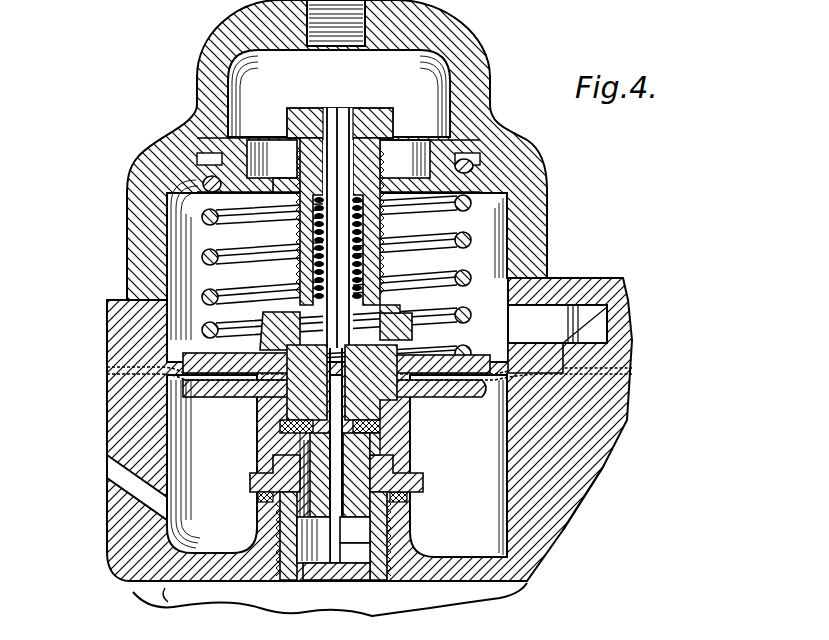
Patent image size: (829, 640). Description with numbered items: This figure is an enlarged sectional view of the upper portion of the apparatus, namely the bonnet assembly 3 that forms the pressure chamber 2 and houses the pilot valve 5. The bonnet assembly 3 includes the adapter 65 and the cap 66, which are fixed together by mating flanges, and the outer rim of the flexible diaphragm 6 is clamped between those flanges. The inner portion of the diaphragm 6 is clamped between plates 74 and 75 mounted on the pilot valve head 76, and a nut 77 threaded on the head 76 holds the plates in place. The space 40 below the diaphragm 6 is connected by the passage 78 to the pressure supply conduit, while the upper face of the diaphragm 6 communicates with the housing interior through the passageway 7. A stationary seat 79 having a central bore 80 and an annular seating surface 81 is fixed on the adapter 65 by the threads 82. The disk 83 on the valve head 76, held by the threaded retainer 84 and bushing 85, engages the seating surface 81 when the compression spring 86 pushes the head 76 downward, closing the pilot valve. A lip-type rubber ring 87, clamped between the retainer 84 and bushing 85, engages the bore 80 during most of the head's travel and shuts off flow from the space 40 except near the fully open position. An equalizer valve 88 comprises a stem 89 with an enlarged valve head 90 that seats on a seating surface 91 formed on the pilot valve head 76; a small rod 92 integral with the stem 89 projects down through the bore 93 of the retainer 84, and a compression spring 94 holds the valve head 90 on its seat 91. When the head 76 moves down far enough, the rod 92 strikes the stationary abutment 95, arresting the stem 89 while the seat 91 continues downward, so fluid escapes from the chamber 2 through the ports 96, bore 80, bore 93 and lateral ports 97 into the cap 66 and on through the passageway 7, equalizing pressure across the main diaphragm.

The chamber 2 is at (168, 598).
The bonnet assembly 3 is at (104, 412).
The pilot valve 5 is at (270, 411).
The flexible diaphragm 6 is at (514, 363).
The passageway 7 is at (600, 347).
The space 40 is at (497, 505).
The adapter 65 is at (552, 526).
The cap 66 is at (535, 170).
The plate 74 is at (478, 367).
The plate 75 is at (483, 399).
The pilot valve head 76 is at (403, 420).
The nut 77 is at (410, 311).
The passage 78 is at (120, 520).
The stationary seat 79 is at (400, 522).
The central bore 80 is at (405, 505).
The annular seating surface 81 is at (383, 452).
The threads 82 is at (390, 560).
The disk 83 is at (287, 428).
The threaded retainer 84 is at (285, 503).
The bushing 85 is at (300, 447).
The compression spring 86 is at (467, 232).
The rubber ring 87 is at (387, 476).
The equalizer valve 88 is at (292, 302).
The stem 89 is at (342, 116).
The valve head 90 is at (266, 319).
The seating surface 91 is at (404, 333).
The rod 92 is at (400, 536).
The bore 93 is at (285, 513).
The compression spring 94 is at (380, 178).
The stationary abutment 95 is at (346, 581).
The ports 96 is at (302, 582).
The lateral ports 97 is at (298, 300).